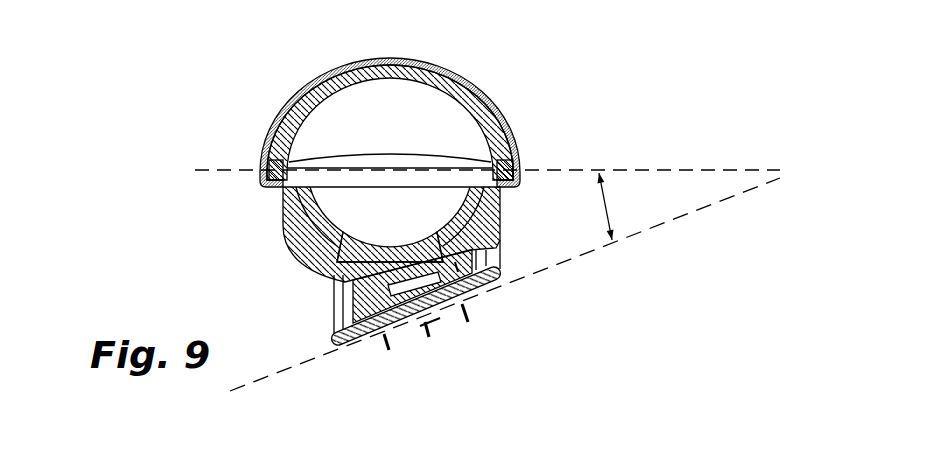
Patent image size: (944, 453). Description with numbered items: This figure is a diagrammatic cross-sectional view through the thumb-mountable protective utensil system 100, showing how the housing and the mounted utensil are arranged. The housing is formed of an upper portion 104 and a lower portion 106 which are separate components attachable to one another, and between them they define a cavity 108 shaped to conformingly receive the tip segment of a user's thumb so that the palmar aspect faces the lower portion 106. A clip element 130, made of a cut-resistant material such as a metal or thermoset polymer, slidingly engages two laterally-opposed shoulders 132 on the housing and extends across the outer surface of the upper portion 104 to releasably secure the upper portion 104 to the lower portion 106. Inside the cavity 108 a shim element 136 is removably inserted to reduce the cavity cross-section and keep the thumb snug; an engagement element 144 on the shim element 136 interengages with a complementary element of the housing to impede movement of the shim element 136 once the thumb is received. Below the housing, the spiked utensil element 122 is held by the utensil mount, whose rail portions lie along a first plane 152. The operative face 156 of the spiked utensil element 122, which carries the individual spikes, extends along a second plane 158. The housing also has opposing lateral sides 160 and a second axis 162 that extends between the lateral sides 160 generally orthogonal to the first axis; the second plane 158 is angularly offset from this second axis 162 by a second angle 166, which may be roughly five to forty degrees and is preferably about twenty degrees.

The thumb-mountable protective utensil system 100 is at (540, 63).
The upper portion 104 is at (440, 71).
The lower portion 106 is at (293, 242).
The cavity 108 is at (408, 140).
The spiked utensil element 122 is at (412, 352).
The clip element 130 is at (343, 62).
The shoulders 132 is at (278, 185).
The shim element 136 is at (473, 203).
The engagement element 144 is at (340, 236).
The first plane 152 is at (313, 347).
The operative face 156 is at (436, 318).
The second plane 158 is at (688, 228).
The lateral sides 160 is at (250, 160).
The second axis 162 is at (705, 170).
The second angle 166 is at (612, 205).